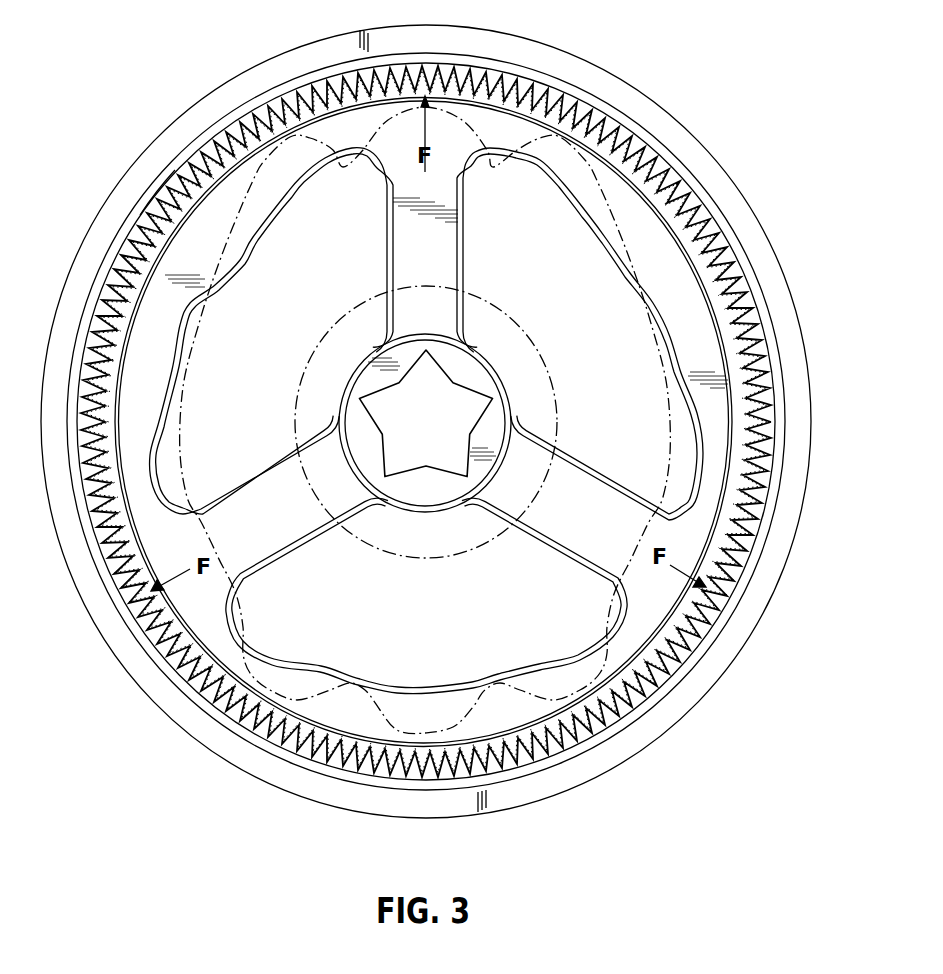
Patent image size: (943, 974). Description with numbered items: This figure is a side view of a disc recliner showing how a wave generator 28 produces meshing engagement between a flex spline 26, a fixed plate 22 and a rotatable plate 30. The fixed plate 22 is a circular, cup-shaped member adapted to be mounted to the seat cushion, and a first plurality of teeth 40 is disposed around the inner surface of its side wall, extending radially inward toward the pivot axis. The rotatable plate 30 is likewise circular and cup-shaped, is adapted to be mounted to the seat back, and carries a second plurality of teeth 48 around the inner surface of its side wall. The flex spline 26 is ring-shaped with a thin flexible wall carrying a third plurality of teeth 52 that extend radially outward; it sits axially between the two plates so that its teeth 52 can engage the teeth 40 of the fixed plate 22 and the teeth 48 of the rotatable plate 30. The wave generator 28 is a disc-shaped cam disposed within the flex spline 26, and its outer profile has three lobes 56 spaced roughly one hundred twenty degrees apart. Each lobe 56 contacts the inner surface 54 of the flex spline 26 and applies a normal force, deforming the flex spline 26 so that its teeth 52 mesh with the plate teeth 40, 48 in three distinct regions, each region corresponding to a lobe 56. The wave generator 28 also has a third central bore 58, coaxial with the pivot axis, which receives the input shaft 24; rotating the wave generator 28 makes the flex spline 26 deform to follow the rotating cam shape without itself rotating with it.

The fixed plate 22 is at (157, 140).
The first plurality of teeth 40 is at (213, 137).
The rotatable plate 30 is at (122, 323).
The lobes 56 is at (467, 93).
The third plurality of teeth 52 is at (712, 242).
The second plurality of teeth 48 is at (153, 195).
The flex spline 26 is at (623, 183).
The wave generator 28 is at (640, 338).
The inner surface 54 is at (630, 180).
The input shaft 24 is at (437, 458).
The third central bore 58 is at (387, 460).